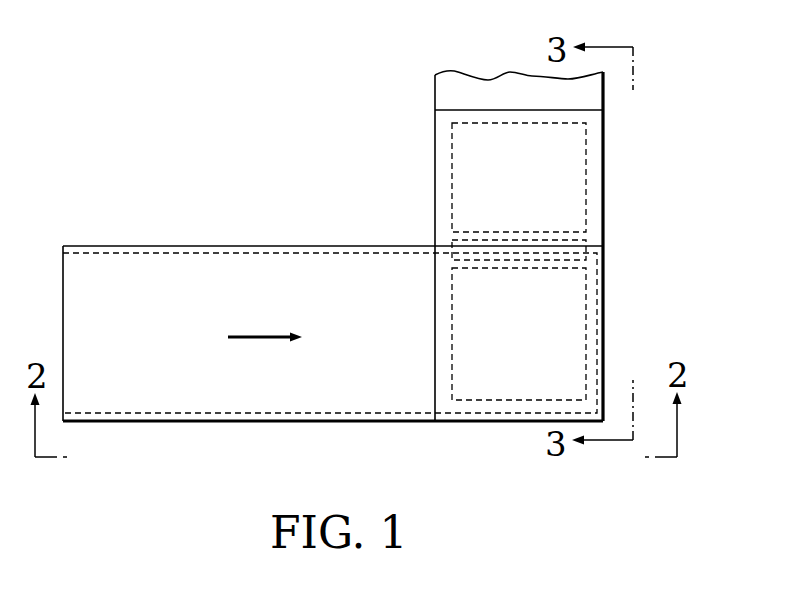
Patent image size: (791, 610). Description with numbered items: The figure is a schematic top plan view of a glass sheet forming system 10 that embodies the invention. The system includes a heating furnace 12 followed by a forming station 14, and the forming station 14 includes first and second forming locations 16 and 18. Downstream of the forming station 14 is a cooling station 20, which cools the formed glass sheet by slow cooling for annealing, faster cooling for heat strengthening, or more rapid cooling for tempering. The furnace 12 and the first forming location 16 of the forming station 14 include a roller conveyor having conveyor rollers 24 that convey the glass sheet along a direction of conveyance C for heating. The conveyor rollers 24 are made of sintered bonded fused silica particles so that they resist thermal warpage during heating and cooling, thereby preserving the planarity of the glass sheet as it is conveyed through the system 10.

The glass sheet forming system 10 is at (322, 120).
The heating furnace 12 is at (239, 433).
The forming station 14 is at (610, 243).
The first forming location 16 is at (612, 342).
The second forming location 18 is at (610, 177).
The cooling station 20 is at (612, 98).
The conveyor rollers 24 is at (352, 424).
The direction of conveyance C is at (273, 334).